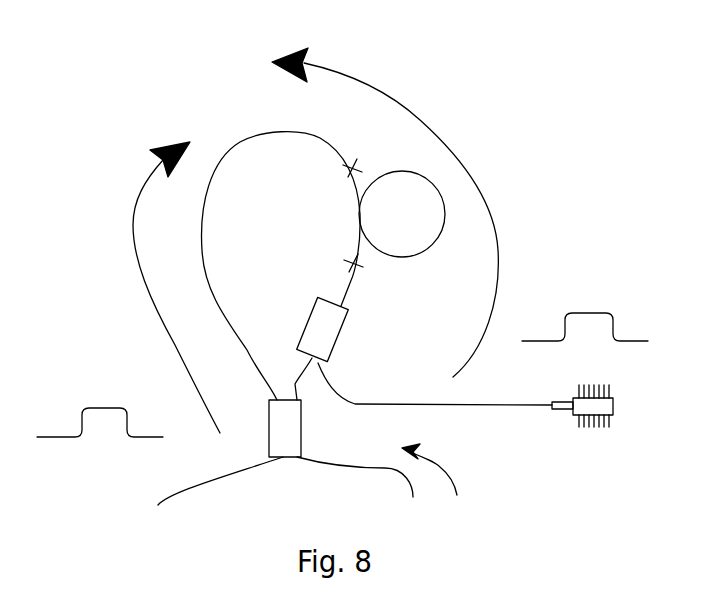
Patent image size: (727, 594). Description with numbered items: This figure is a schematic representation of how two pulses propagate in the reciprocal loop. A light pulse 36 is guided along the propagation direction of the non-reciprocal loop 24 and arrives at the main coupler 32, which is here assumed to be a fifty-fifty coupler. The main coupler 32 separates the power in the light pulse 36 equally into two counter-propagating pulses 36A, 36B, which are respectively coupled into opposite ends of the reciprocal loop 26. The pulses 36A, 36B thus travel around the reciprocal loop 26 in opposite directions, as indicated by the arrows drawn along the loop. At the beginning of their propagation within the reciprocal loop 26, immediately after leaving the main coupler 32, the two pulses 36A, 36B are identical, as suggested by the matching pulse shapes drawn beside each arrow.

The non-reciprocal loop 24 is at (350, 470).
The reciprocal loop 26 is at (270, 135).
The main coupler 32 is at (301, 425).
The light pulse 36 is at (440, 467).
The counter-propagating pulse A 36A is at (175, 345).
The counter-propagating pulse B 36B is at (493, 237).